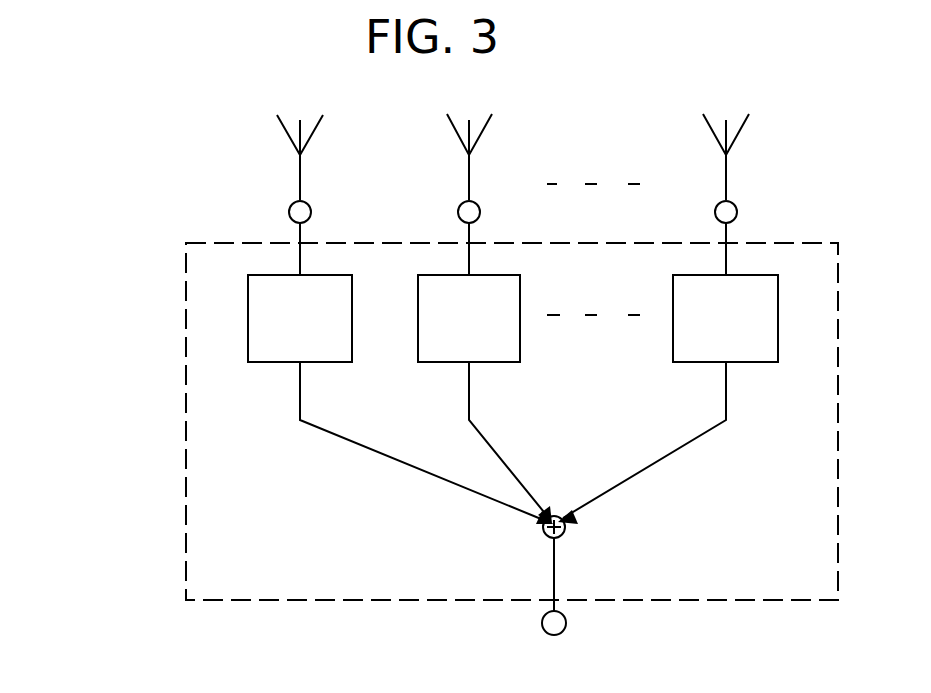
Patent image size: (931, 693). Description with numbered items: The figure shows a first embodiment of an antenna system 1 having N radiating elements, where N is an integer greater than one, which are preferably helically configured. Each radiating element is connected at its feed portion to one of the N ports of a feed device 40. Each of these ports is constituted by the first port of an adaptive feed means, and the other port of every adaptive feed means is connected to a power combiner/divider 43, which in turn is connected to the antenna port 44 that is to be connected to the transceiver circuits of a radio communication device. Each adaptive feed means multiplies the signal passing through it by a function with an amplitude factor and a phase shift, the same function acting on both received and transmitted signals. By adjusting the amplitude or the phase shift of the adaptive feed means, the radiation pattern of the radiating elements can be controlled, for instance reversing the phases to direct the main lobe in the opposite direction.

The antenna system 1 is at (116, 245).
The feed device 40 is at (186, 358).
The power combiner/divider 43 is at (566, 530).
The antenna port 44 is at (567, 624).